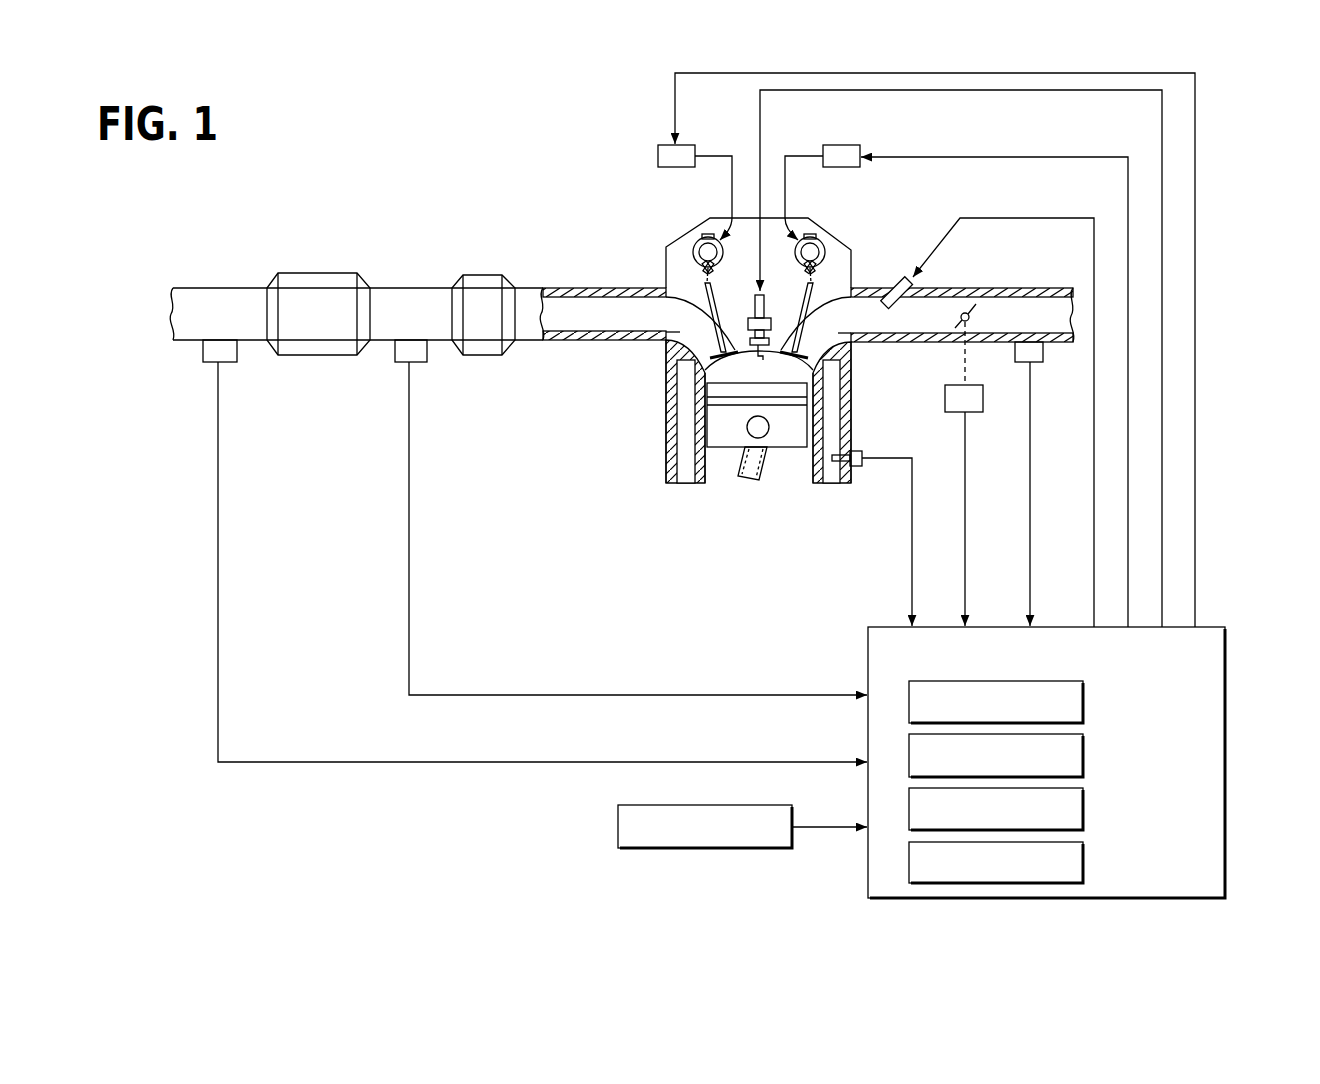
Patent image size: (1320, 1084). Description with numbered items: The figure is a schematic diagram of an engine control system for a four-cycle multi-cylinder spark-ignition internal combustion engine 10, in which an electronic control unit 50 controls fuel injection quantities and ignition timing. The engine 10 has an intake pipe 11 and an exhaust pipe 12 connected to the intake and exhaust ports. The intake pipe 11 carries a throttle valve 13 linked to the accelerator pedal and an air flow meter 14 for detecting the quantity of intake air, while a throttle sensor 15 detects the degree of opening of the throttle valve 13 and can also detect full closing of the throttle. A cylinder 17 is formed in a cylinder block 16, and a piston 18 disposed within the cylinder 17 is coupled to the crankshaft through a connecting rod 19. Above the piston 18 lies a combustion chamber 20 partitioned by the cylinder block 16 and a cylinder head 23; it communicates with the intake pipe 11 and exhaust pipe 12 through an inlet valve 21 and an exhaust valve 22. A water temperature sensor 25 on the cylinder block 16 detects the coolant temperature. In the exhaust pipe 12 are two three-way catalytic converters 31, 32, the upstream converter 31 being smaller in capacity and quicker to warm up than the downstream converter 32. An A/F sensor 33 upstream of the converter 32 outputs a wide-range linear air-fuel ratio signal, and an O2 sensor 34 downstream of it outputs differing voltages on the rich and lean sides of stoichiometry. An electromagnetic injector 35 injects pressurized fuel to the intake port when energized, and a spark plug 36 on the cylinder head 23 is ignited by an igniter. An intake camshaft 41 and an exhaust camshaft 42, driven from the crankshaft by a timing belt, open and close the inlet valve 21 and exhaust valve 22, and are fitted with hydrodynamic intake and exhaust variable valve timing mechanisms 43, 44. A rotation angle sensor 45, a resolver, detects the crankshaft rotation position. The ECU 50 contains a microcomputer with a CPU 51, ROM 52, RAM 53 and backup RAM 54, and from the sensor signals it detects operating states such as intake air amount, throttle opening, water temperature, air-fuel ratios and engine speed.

The internal combustion engine 10 is at (906, 215).
The intake pipe 11 is at (996, 288).
The exhaust pipe 12 is at (551, 288).
The throttle valve 13 is at (976, 310).
The air flow meter 14 is at (1035, 363).
The throttle sensor 15 is at (971, 413).
The cylinder block 16 is at (853, 418).
The cylinder 17 is at (807, 485).
The piston 18 is at (791, 450).
The connecting rod 19 is at (765, 479).
The combustion chamber 20 is at (731, 452).
The inlet valve 21 is at (858, 344).
The exhaust valve 22 is at (690, 357).
The cylinder head 23 is at (666, 247).
The water temperature sensor 25 is at (858, 467).
The catalytic converter 31 is at (467, 275).
The catalytic converter 32 is at (305, 273).
The A/F sensor 33 is at (417, 364).
The O2 sensor 34 is at (229, 364).
The injector 35 is at (899, 278).
The spark plug 36 is at (770, 300).
The intake camshaft 41 is at (823, 239).
The exhaust camshaft 42 is at (707, 236).
The intake variable valve timing mechanism 43 is at (858, 145).
The exhaust variable valve timing mechanism 44 is at (683, 145).
The rotation angle sensor 45 is at (616, 826).
The electronic control unit 50 is at (1076, 762).
The CPU 51 is at (1086, 702).
The ROM 52 is at (1086, 756).
The RAM 53 is at (1086, 809).
The backup RAM 54 is at (1086, 862).